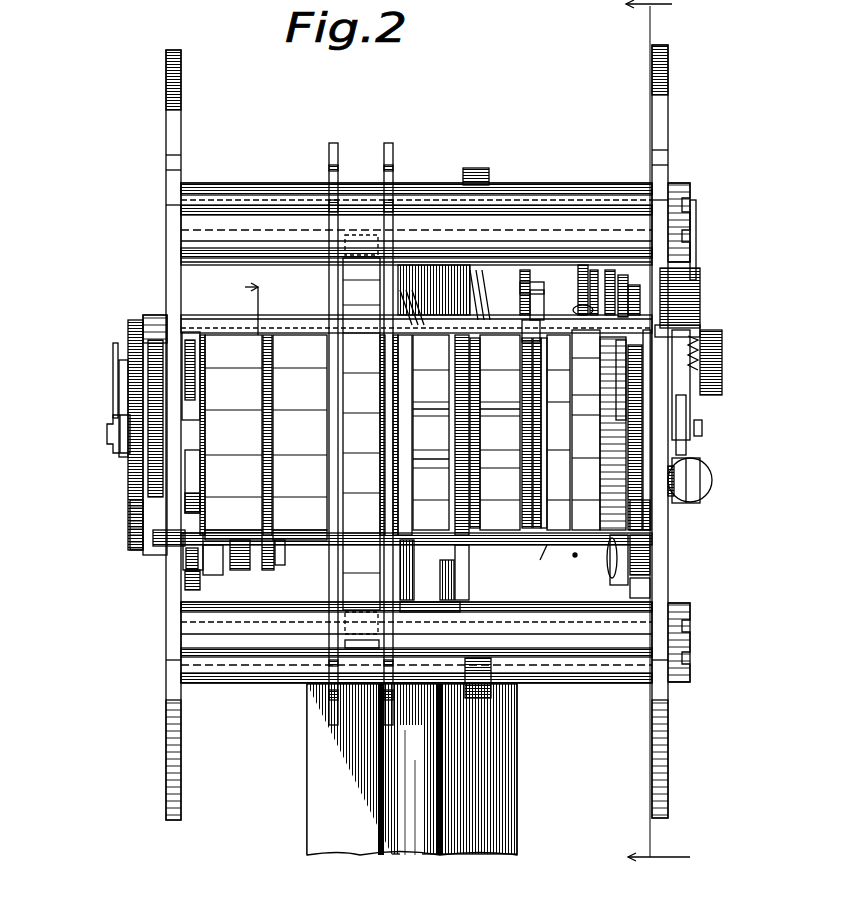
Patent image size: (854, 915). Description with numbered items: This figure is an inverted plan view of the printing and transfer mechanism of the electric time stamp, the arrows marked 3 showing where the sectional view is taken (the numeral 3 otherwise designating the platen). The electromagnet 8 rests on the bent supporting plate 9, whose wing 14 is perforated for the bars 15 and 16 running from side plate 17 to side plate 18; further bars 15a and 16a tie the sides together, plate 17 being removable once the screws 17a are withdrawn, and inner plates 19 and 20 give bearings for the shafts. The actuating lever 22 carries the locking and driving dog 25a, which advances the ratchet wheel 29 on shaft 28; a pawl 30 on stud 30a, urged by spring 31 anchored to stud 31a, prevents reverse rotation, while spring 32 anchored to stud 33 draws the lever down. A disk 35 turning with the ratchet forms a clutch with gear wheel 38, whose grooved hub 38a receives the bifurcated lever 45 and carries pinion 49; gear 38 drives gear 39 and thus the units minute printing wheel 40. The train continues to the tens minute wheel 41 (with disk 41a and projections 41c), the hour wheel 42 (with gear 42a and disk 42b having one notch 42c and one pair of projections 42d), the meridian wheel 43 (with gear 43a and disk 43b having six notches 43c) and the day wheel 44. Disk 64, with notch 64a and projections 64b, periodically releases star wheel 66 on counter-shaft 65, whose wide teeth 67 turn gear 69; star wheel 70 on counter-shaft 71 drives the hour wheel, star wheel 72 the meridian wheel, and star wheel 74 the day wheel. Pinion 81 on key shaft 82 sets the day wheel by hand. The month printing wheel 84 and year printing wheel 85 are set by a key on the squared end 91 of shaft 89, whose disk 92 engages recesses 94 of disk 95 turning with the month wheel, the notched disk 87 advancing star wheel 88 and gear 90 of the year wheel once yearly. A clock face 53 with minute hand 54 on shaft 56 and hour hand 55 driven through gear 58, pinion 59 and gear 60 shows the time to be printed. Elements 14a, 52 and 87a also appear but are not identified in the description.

The platen 3 is at (658, 443).
The electromagnet 8 is at (242, 300).
The bent supporting plate 9 is at (497, 790).
The wing or lug 14 is at (476, 172).
The mounting lug 14a is at (690, 670).
The bar 15 is at (595, 668).
The bar 15a is at (640, 640).
The bar 16 is at (560, 190).
The bar 16a is at (592, 330).
The side plate 17 is at (668, 140).
The screws 17a is at (676, 240).
The side plate 18 is at (178, 233).
The plate 19 is at (393, 155).
The plate 20 is at (338, 150).
The actuating lever 22 is at (548, 285).
The locking and driving dog 25a is at (733, 246).
The shaft 28 is at (455, 320).
The locking and driving ratchet wheel 29 is at (688, 400).
The pawl 30 is at (690, 426).
The stud 30a is at (698, 440).
The spring 31 is at (712, 352).
The stud 31a is at (700, 312).
The spring 32 is at (704, 475).
The stud 33 is at (700, 494).
The disk 35 is at (690, 272).
The gear wheel 38 is at (617, 300).
The elongated hub 38a is at (583, 290).
The gear wheel 39 is at (634, 530).
The units minute printing wheel 40 is at (612, 530).
The tens minute printing wheel 41 is at (560, 530).
The disk 41a is at (544, 569).
The projections 41c is at (587, 554).
The hour printing wheel 42 is at (505, 535).
The gear 42a is at (500, 410).
The locking and driving disk 42b is at (470, 535).
The notch 42c is at (486, 310).
The projections 42d is at (485, 540).
The meridian printing wheel 43 is at (432, 540).
The gear 43a is at (431, 458).
The locking and driving disk 43b is at (408, 600).
The notches 43c is at (431, 410).
The day printing wheel 44 is at (340, 565).
The bifurcated lever 45 is at (634, 285).
The pinion 49 is at (543, 301).
The cam 52 is at (434, 288).
The clock face 53 is at (130, 497).
The minute hand 54 is at (112, 357).
The hour hand 55 is at (118, 390).
The shaft 56 is at (105, 436).
The gear 58 is at (146, 470).
The pinion 59 is at (140, 325).
The gear 60 is at (148, 345).
The disk 64 is at (648, 510).
The notch 64a is at (630, 435).
The projections 64b is at (652, 498).
The counter-shaft 65 is at (622, 560).
The star wheel 66 is at (640, 575).
The wide teeth 67 is at (650, 592).
The gear wheel 69 is at (586, 430).
The star wheel 70 is at (522, 300).
The counter-shaft 71 is at (410, 290).
The star wheel 72 is at (463, 573).
The star wheel 74 is at (362, 658).
The pinion 81 is at (342, 300).
The shaft 82 is at (236, 325).
The month printing wheel 84 is at (272, 556).
The year printing wheel 85 is at (220, 572).
The notched disk 87 is at (186, 556).
The bracket arm 87a is at (146, 530).
The star wheel 88 is at (188, 584).
The shaft 89 is at (246, 542).
The gear 90 is at (182, 305).
The squared end 91 is at (156, 553).
The disk 92 is at (278, 568).
The recesses 94 is at (262, 418).
The disk 95 is at (268, 335).